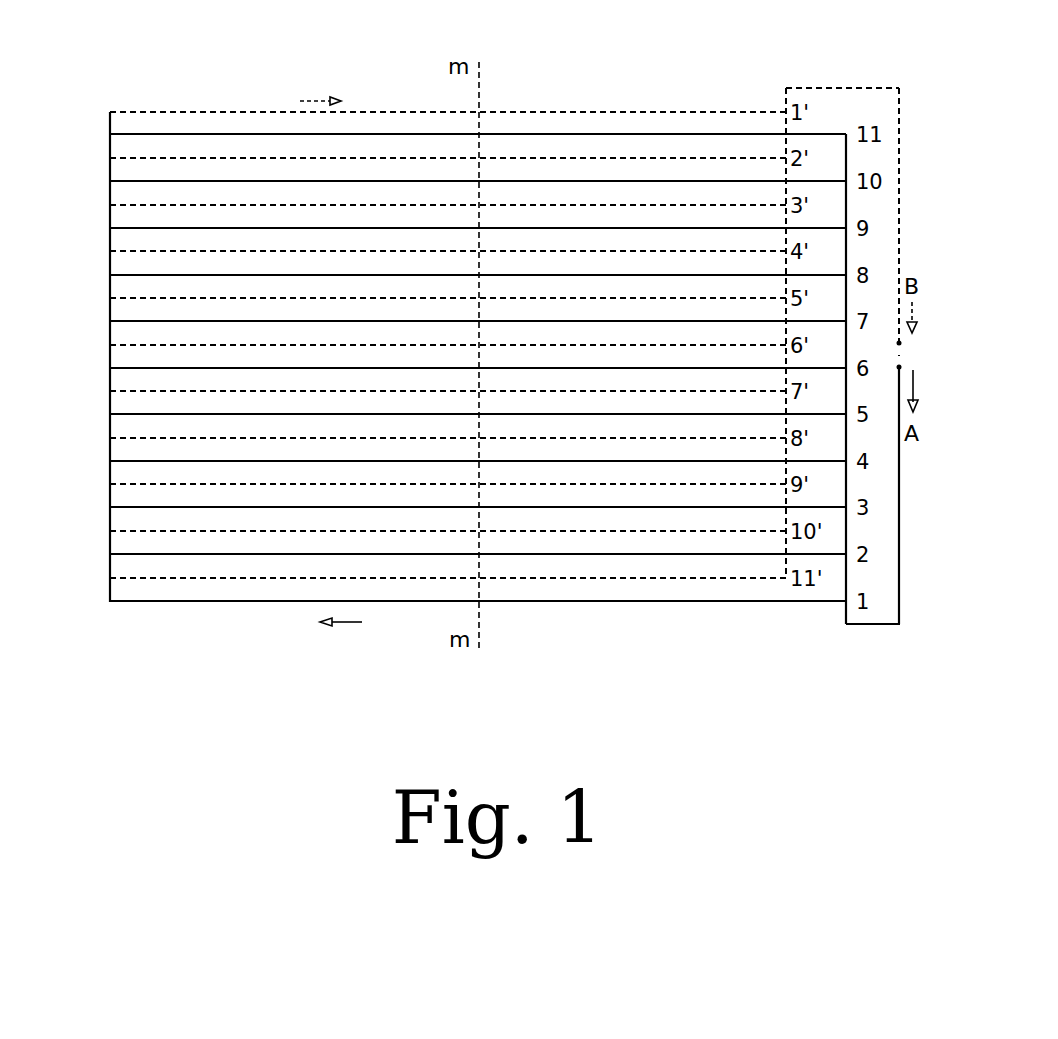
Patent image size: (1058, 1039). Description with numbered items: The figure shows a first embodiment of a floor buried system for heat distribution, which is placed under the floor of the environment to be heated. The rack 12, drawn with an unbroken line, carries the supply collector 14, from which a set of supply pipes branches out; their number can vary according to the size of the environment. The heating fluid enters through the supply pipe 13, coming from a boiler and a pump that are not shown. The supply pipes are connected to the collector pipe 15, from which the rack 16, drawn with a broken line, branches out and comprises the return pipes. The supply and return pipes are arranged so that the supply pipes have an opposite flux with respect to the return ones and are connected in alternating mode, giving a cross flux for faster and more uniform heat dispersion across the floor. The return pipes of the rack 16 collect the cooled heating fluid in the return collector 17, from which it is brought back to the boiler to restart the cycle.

The rack 12 is at (633, 133).
The supply pipe 13 is at (901, 553).
The supply collector 14 is at (846, 337).
The collector pipe 15 is at (110, 337).
The rack 16 is at (148, 253).
The return collector 17 is at (786, 100).